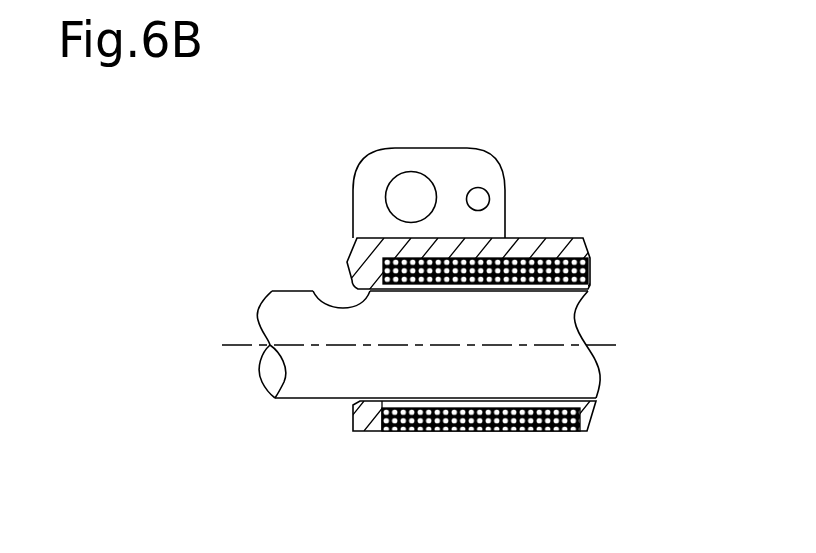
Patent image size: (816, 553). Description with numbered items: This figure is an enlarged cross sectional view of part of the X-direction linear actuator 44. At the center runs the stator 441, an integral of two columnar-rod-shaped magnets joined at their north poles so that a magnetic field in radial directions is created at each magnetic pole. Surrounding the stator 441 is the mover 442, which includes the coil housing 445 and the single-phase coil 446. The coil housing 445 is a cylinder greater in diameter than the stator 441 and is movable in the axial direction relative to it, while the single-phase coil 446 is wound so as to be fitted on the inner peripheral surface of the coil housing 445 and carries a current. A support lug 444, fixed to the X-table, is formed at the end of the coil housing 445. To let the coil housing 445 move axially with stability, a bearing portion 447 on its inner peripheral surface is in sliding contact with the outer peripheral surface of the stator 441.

The X-direction linear actuator 44 is at (551, 448).
The stator 441 is at (590, 385).
The mover 442 is at (560, 255).
The support lug 444 is at (457, 158).
The coil housing 445 is at (523, 247).
The single-phase coil 446 is at (588, 267).
The bearing portion 447 is at (367, 397).